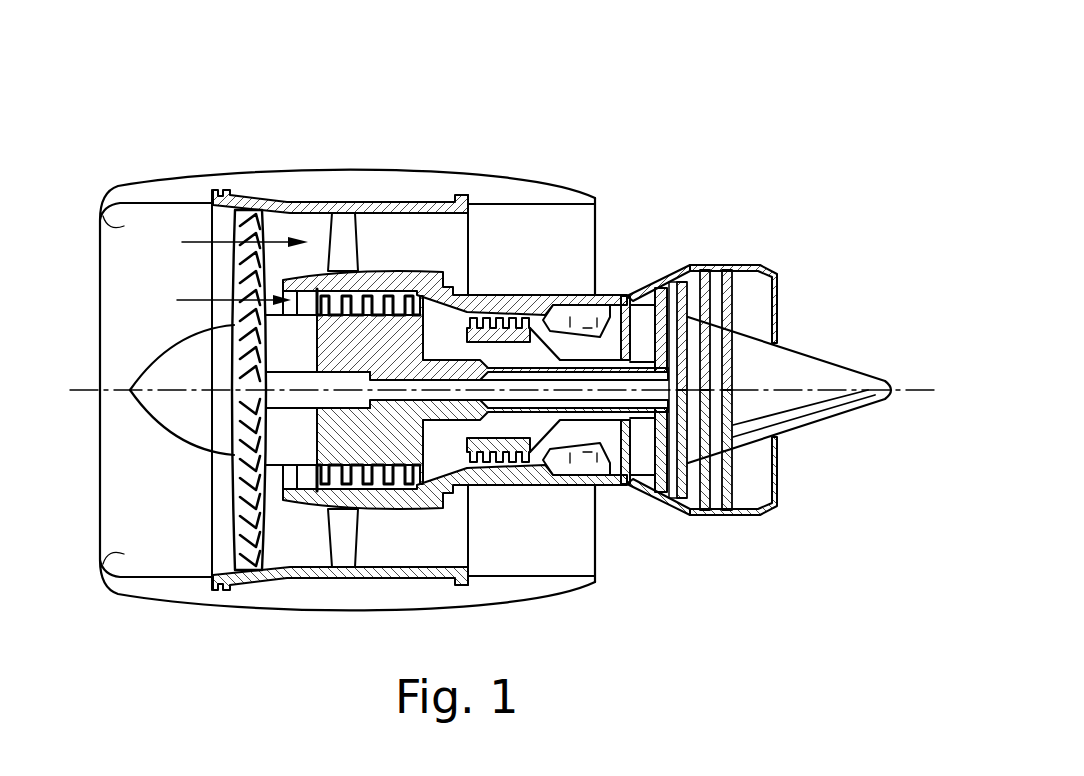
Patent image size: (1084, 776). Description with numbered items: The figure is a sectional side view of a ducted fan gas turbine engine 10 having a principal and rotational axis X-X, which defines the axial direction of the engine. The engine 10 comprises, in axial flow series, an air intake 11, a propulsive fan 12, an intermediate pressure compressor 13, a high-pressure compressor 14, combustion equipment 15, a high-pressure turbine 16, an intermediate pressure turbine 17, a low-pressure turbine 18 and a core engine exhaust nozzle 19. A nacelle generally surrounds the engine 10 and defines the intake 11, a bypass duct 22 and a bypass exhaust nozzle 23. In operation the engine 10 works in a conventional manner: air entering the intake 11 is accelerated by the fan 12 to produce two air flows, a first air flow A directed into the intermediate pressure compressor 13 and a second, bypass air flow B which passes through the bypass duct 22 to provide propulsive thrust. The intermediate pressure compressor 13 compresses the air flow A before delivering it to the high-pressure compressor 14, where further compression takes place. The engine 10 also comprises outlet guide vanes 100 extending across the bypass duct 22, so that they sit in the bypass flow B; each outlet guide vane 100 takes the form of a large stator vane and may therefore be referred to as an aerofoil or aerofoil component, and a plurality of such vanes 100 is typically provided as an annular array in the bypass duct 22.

The ducted fan gas turbine engine 10 is at (500, 330).
The air intake 11 is at (105, 213).
The propulsive fan 12 is at (233, 520).
The intermediate pressure compressor 13 is at (386, 468).
The high-pressure compressor 14 is at (493, 317).
The combustion equipment 15 is at (560, 462).
The high-pressure turbine 16 is at (622, 487).
The intermediate pressure turbine 17 is at (658, 290).
The low-pressure turbine 18 is at (683, 498).
The core engine exhaust nozzle 19 is at (772, 268).
The bypass duct 22 is at (578, 242).
The bypass exhaust nozzle 23 is at (590, 196).
The outlet guide vane 100 is at (343, 215).